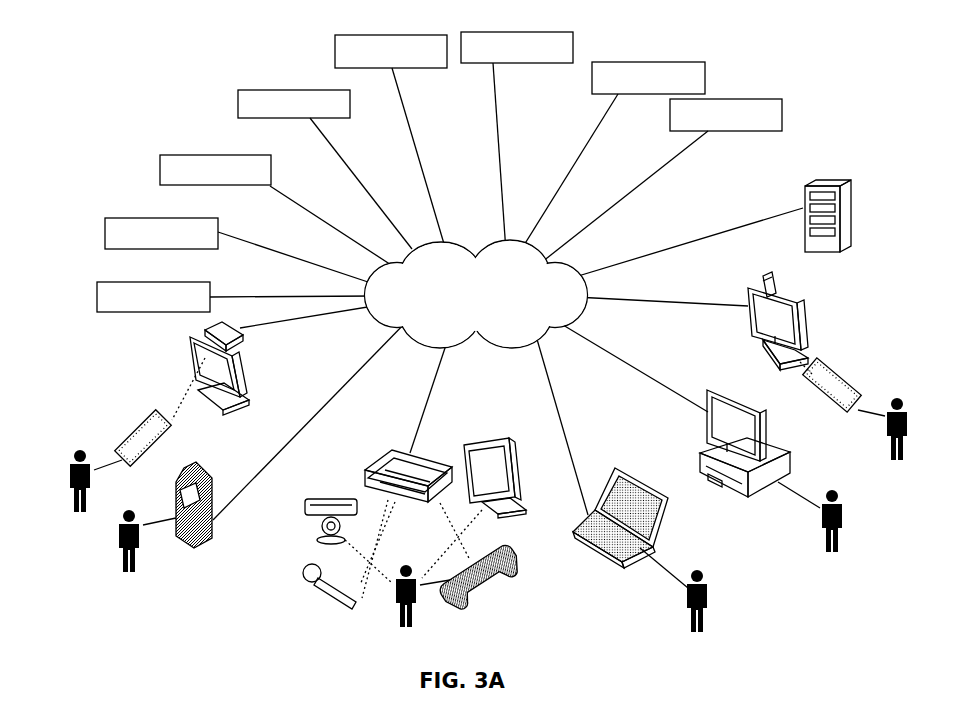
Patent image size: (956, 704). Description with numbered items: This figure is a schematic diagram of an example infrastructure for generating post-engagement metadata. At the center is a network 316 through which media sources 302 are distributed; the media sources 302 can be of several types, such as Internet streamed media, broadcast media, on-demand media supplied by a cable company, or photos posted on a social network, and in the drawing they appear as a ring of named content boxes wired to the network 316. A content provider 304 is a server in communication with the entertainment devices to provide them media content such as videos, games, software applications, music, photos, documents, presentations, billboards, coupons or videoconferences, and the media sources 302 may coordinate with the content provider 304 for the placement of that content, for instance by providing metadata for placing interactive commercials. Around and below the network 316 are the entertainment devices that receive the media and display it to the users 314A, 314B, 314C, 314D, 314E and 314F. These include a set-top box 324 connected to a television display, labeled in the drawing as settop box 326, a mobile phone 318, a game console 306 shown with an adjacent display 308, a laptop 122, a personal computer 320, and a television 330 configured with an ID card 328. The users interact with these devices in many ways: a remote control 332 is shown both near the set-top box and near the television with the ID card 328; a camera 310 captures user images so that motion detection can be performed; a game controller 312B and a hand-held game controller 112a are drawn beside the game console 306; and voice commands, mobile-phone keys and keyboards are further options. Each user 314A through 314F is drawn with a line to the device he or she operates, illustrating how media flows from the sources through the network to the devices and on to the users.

The media sources 302 is at (335, 38).
The content provider 304 is at (852, 210).
The game console 306 is at (432, 452).
The display 308 is at (498, 444).
The camera 310 is at (313, 498).
The game controller 312B is at (328, 596).
The user 314A is at (78, 512).
The user 314B is at (126, 572).
The user 314C is at (402, 626).
The user 314D is at (700, 628).
The user 314E is at (835, 548).
The user 314F is at (897, 462).
The network 316 is at (549, 255).
The mobile phone 318 is at (200, 478).
The Personal Computer 320 is at (737, 395).
The laptop computer 122 is at (638, 471).
The game controller 112a is at (507, 552).
The set-top box 324 is at (198, 330).
The settop box 326 is at (249, 386).
The ID card 328 is at (763, 276).
The television 330 is at (805, 333).
The remote control 332 is at (848, 370).